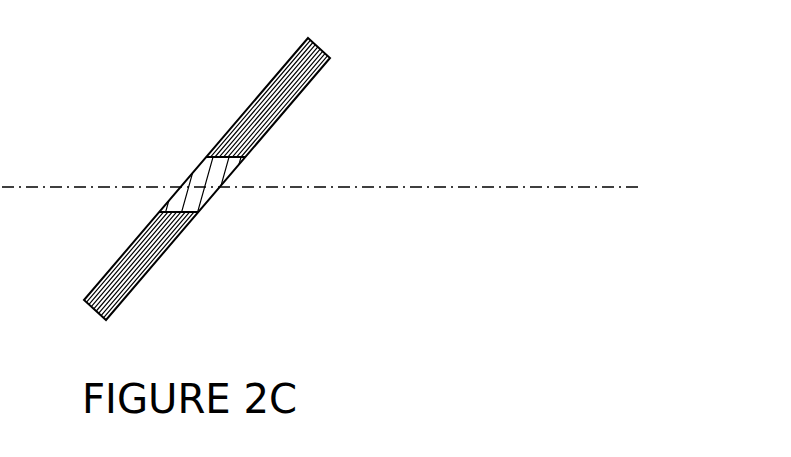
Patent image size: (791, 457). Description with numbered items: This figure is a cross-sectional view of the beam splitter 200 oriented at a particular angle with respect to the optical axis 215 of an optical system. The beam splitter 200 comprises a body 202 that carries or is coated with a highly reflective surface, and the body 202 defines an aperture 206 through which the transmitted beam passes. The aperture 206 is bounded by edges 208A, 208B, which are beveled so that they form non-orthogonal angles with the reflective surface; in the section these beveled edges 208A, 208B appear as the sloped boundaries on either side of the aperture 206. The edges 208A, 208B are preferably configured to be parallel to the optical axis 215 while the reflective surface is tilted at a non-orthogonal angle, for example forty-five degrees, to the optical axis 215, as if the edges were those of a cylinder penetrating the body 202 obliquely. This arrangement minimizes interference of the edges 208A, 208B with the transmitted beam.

The beam splitter 200 is at (281, 168).
The body 202 is at (283, 90).
The aperture 206 is at (204, 160).
The edge 208A is at (152, 225).
The edge 208B is at (236, 128).
The optical axis 215 is at (403, 187).